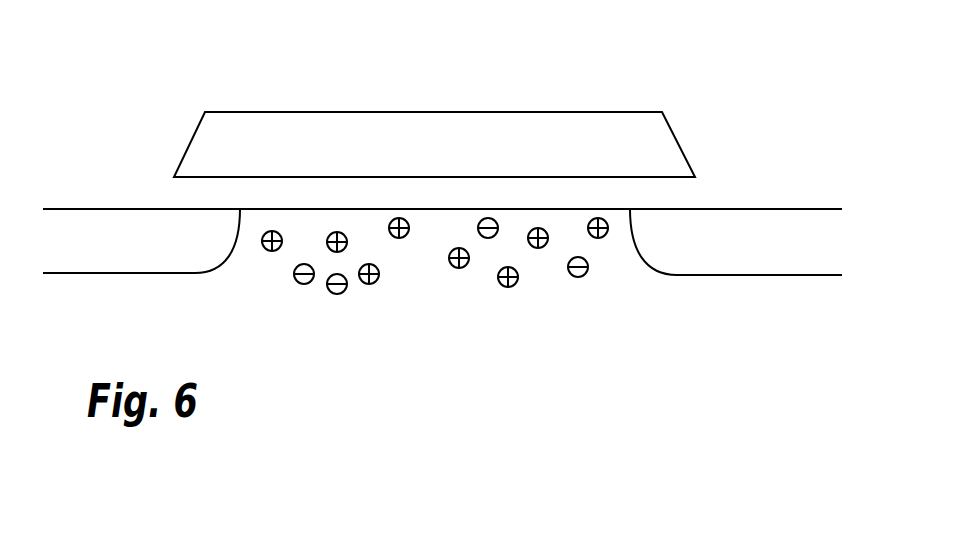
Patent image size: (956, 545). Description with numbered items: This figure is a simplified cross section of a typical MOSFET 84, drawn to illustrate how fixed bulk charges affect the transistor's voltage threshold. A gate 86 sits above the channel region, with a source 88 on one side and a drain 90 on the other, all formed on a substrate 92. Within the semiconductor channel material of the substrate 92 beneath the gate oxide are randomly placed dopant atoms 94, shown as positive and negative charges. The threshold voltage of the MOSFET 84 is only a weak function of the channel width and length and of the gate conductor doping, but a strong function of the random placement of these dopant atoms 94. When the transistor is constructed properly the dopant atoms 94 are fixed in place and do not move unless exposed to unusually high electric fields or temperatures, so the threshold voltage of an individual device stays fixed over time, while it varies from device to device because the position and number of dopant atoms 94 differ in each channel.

The MOSFET 84 is at (695, 80).
The gate 86 is at (434, 144).
The source 88 is at (131, 241).
The drain 90 is at (736, 242).
The substrate 92 is at (272, 337).
The dopant atoms 94 is at (463, 272).